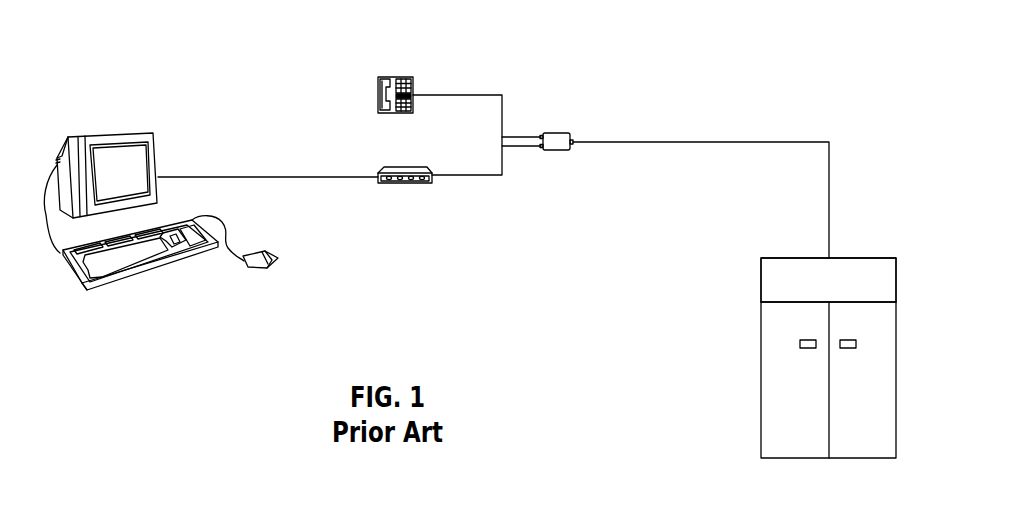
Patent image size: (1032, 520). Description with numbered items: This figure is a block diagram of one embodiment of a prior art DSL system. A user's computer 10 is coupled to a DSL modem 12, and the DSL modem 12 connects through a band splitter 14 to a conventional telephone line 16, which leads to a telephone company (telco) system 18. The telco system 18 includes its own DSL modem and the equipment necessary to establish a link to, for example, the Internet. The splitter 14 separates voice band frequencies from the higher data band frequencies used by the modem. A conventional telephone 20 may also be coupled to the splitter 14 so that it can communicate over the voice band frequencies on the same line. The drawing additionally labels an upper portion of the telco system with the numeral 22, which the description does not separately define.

The computer 10 is at (105, 133).
The DSL modem 12 is at (433, 178).
The band splitter 14 is at (555, 142).
The telephone line 16 is at (805, 133).
The telephone company (telco) system 18 is at (761, 357).
The telephone 20 is at (395, 75).
The telco system upper section 22 is at (860, 272).